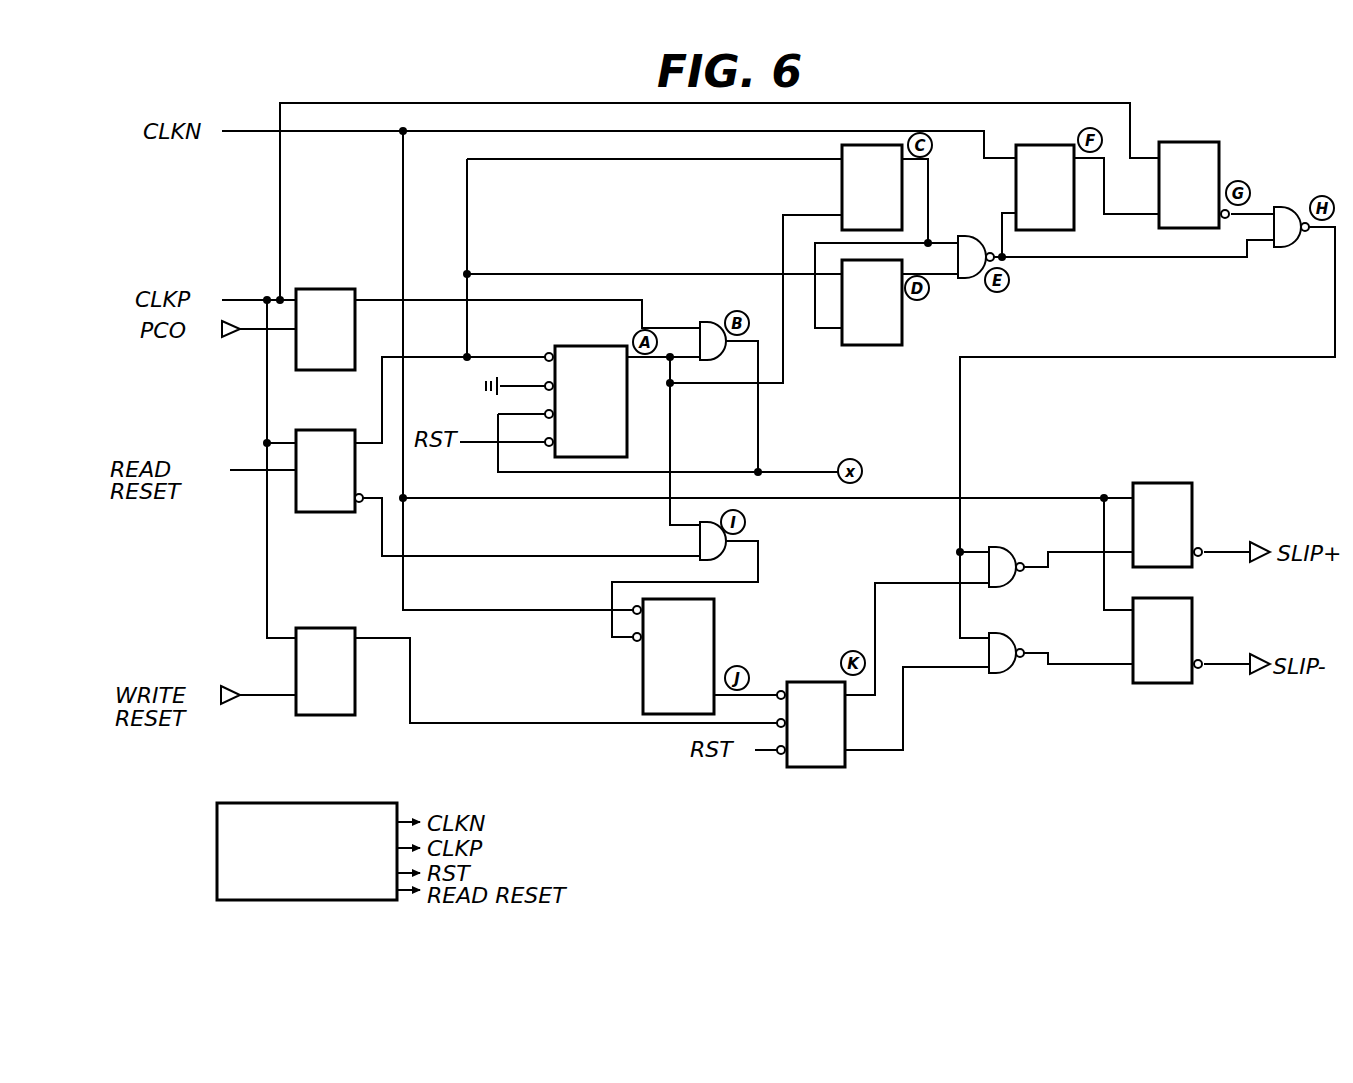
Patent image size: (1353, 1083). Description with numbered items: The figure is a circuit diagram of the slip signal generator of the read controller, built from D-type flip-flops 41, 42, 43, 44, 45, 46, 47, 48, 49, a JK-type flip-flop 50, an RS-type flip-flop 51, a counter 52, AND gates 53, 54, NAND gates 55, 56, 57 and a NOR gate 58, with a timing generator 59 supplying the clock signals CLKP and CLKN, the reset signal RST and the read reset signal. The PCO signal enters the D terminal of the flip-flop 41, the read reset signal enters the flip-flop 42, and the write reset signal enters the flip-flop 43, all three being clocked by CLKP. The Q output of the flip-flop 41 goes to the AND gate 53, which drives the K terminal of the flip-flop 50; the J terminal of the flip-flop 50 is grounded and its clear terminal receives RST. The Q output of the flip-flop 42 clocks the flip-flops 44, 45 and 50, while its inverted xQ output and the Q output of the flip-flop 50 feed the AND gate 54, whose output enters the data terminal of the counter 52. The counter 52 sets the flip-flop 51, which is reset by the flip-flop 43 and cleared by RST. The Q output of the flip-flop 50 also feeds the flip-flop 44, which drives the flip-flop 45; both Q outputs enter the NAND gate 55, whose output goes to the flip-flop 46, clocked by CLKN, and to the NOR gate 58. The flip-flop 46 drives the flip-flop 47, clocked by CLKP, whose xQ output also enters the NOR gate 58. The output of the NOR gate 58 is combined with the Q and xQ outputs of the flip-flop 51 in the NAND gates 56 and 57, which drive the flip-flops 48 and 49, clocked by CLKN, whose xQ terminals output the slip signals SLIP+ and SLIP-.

The D-type flip-flop 41 is at (318, 289).
The D-type flip-flop 42 is at (312, 430).
The D-type flip-flop 43 is at (313, 628).
The D-type flip-flop 44 is at (842, 197).
The D-type flip-flop 45 is at (902, 337).
The D-type flip-flop 46 is at (1035, 145).
The D-type flip-flop 47 is at (1178, 142).
The D-type flip-flop 48 is at (1155, 483).
The D-type flip-flop 49 is at (1192, 627).
The JK-type flip-flop 50 is at (590, 346).
The RS-type flip-flop 51 is at (808, 682).
The counter 52 is at (714, 632).
The AND gate 53 is at (708, 320).
The AND gate 54 is at (735, 513).
The NAND gate 55 is at (965, 238).
The NAND gate 56 is at (1010, 555).
The NAND gate 57 is at (1010, 645).
The NOR gate 58 is at (1288, 210).
The timing generator 59 is at (330, 803).